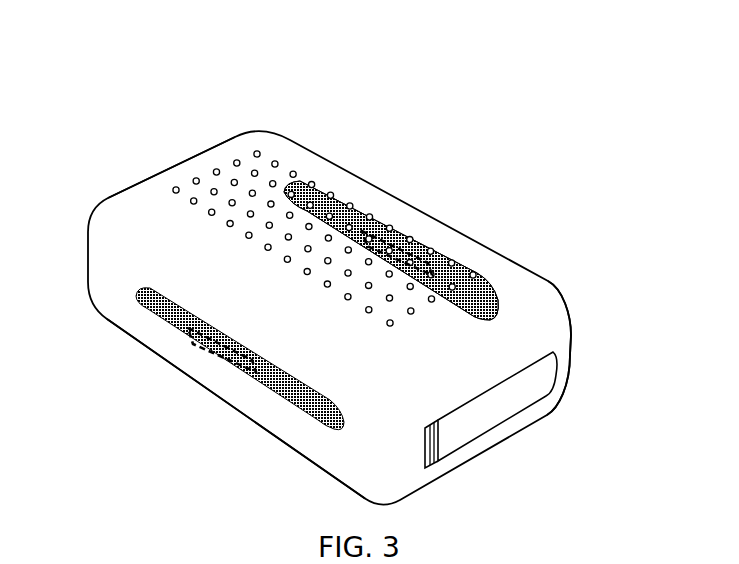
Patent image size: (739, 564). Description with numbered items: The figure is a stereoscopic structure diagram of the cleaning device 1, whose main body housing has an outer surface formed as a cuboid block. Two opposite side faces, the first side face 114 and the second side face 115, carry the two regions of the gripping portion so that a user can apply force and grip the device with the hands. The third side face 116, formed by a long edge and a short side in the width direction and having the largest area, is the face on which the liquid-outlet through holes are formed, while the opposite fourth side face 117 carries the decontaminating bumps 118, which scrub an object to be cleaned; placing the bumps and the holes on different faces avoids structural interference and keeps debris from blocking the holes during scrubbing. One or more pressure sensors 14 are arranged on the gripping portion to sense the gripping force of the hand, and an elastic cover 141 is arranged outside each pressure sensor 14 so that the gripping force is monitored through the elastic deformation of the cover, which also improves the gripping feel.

The cleaning device 1 is at (92, 47).
The first side face 114 is at (140, 268).
The second side face 115 is at (571, 307).
The third side face 116 is at (277, 446).
The fourth side face 117 is at (396, 213).
The decontaminating bumps 118 is at (259, 149).
The pressure sensor 14 is at (414, 247).
The elastic cover 141 is at (481, 276).